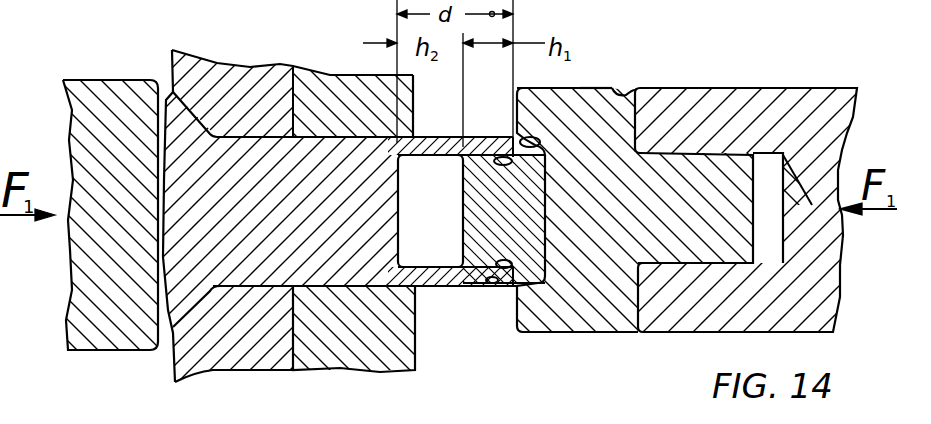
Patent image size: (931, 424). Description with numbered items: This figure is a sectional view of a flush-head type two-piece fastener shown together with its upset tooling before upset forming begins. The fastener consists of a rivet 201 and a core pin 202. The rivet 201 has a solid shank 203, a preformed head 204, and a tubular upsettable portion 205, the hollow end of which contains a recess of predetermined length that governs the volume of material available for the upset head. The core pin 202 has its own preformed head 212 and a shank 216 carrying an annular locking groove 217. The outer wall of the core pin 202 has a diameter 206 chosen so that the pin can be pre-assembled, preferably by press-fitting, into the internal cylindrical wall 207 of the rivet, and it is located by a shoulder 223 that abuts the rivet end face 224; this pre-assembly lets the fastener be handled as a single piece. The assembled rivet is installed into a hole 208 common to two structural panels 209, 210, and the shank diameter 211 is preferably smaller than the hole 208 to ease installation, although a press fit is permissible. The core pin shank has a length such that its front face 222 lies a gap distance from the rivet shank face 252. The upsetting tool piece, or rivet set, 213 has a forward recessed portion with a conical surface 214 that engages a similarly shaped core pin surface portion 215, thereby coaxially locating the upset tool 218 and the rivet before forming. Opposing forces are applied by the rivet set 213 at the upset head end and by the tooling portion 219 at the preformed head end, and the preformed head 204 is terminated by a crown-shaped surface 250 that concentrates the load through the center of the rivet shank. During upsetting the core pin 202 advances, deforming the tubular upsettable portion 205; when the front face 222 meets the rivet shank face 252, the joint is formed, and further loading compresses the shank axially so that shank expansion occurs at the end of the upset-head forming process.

The rivet 201 is at (285, 201).
The core pin 202 is at (512, 197).
The solid shank 203 is at (328, 277).
The preformed head 204 is at (173, 290).
The tubular upsettable portion 205 is at (500, 280).
The diameter 206 is at (497, 270).
The internal cylindrical wall 207 is at (432, 290).
The hole 208 is at (320, 130).
The structural panel 209 is at (214, 69).
The structural panel 210 is at (340, 77).
The shank diameter 211 is at (231, 137).
The preformed head 212 is at (585, 275).
The upsetting tool piece (rivet set) 213 is at (617, 90).
The conical surface 214 is at (565, 90).
The core pin surface portion 215 is at (601, 87).
The shank 216 is at (548, 285).
The annular locking groove 217 is at (545, 283).
The upset tool 218 is at (716, 113).
The tooling portion 219 is at (84, 82).
The front face 222 is at (472, 203).
The shoulder 223 is at (533, 135).
The rivet end face 224 is at (500, 157).
The crown-shaped surface 250 is at (165, 100).
The rivet shank face 252 is at (403, 172).